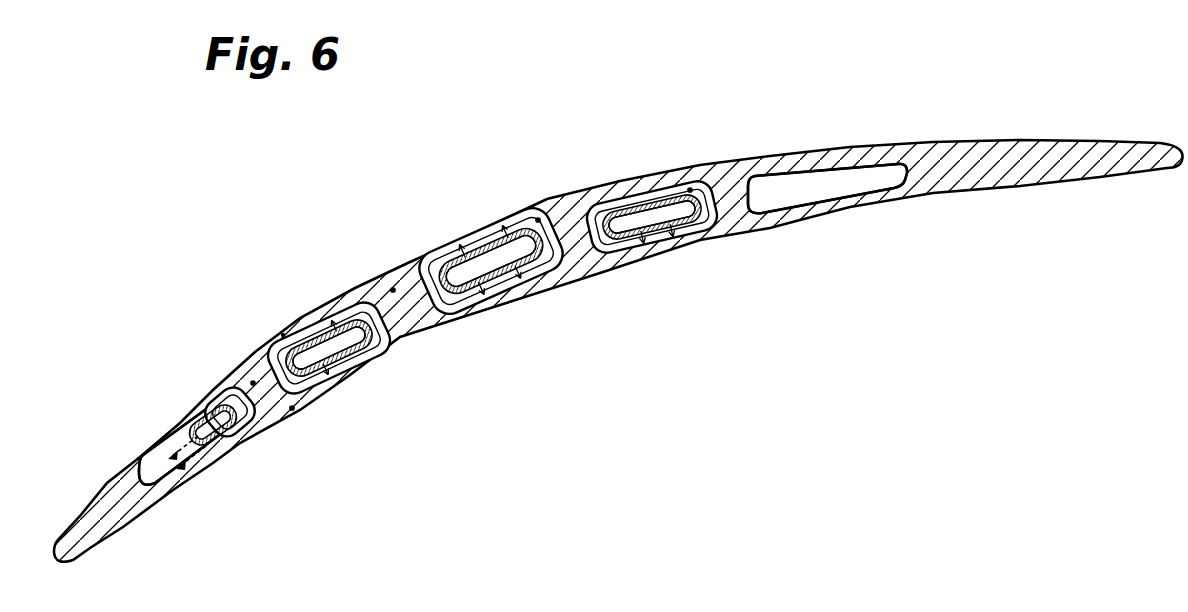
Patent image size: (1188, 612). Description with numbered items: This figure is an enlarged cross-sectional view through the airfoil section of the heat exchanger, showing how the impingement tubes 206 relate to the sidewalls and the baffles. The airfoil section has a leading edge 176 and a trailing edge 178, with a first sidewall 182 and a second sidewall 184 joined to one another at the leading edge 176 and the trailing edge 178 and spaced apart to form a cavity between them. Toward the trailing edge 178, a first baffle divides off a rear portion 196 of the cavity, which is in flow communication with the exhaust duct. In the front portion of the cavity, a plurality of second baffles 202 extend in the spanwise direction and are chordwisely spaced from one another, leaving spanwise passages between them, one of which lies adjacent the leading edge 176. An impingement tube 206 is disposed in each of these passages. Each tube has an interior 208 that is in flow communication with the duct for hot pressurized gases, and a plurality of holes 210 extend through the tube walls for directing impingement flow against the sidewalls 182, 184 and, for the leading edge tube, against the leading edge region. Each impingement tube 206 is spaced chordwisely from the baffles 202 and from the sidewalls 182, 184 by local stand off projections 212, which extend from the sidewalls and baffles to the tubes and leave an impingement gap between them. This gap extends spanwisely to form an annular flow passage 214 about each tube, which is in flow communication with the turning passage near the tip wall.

The leading edge 176 is at (108, 490).
The trailing edge 178 is at (1098, 158).
The first sidewall 182 is at (283, 335).
The second sidewall 184 is at (292, 408).
The rear portion 196 is at (846, 180).
The second baffles 202 is at (393, 290).
The impingement tubes 206 is at (648, 203).
The interior 208 is at (660, 218).
The holes 210 is at (243, 417).
The stand off projections 212 is at (487, 247).
The annular flow passage 214 is at (690, 190).